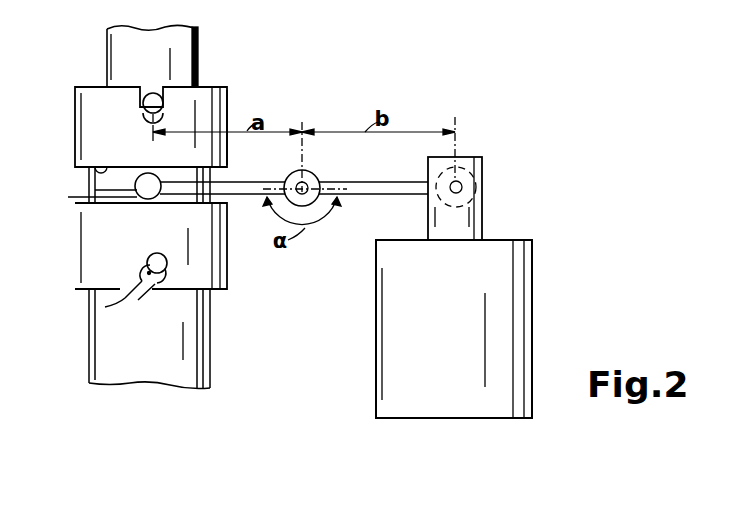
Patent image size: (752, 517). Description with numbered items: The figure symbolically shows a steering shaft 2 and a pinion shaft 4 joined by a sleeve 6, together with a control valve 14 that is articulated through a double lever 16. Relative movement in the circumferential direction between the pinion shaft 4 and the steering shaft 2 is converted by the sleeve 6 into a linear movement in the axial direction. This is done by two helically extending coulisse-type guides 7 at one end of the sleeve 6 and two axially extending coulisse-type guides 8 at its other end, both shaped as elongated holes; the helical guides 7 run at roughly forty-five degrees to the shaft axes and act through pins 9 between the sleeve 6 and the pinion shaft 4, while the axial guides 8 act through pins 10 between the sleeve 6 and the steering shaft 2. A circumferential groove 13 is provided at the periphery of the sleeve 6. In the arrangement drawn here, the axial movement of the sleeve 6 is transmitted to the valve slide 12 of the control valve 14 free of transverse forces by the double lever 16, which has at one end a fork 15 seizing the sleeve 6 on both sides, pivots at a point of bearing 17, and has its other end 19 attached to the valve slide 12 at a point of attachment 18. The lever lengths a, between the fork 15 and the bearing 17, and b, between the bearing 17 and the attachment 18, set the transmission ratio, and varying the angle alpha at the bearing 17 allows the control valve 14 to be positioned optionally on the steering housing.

The steering shaft 2 is at (182, 47).
The pinion shaft 4 is at (142, 365).
The sleeve 6 is at (228, 98).
The helically extending coulisse-type guides 7 is at (128, 296).
The axially extending coulisse-type guides 8 is at (142, 103).
The pins 9 is at (138, 300).
The pins 10 is at (159, 93).
The valve slide 12 is at (465, 155).
The circumferential groove 13 is at (88, 183).
The control valve 14 is at (498, 240).
The fork 15 is at (68, 196).
The double lever 16 is at (400, 187).
The point of bearing 17 is at (307, 197).
The point of attachment 18 is at (465, 187).
The other end 19 is at (493, 163).